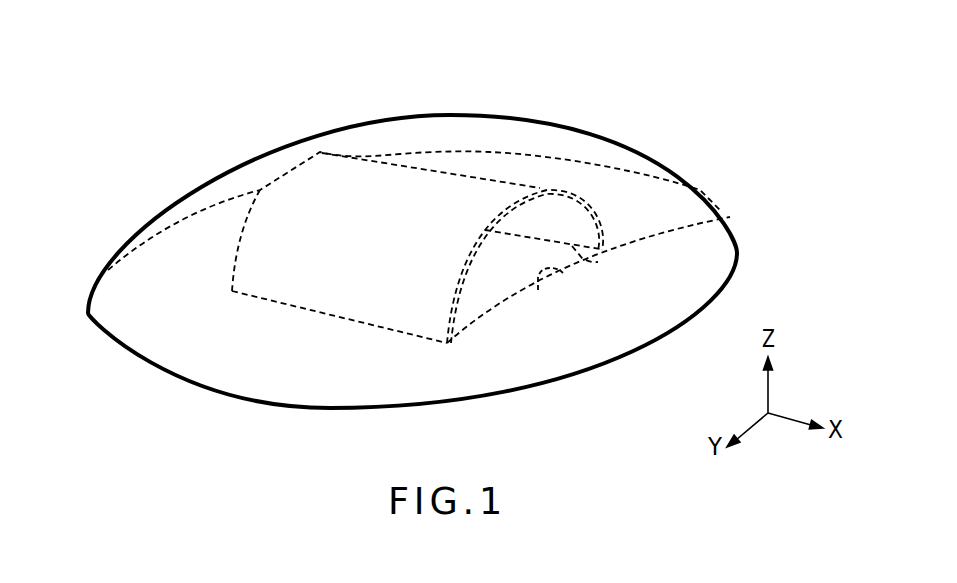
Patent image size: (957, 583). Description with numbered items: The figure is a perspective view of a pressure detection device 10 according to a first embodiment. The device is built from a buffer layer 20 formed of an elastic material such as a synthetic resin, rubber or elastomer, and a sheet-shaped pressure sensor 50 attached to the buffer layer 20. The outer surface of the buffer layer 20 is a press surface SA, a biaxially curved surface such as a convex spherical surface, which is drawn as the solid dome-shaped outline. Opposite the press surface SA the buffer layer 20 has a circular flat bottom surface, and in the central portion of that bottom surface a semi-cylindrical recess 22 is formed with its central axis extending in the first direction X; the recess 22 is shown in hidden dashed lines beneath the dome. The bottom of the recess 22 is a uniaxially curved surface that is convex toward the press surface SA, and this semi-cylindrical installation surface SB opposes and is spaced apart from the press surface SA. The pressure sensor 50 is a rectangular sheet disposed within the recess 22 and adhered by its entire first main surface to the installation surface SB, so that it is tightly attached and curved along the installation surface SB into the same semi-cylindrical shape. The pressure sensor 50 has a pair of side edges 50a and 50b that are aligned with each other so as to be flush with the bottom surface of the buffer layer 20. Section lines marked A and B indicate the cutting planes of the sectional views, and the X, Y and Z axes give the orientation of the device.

The pressure detection device 10 is at (497, 65).
The buffer layer 20 is at (695, 175).
The recess 22 is at (564, 278).
The pressure sensor 50 is at (483, 264).
The side edge 50a is at (408, 336).
The side edge 50b is at (730, 217).
The press surface SA is at (405, 130).
The installation surface SB is at (310, 182).
The section line A is at (710, 57).
The section line B is at (140, 134).